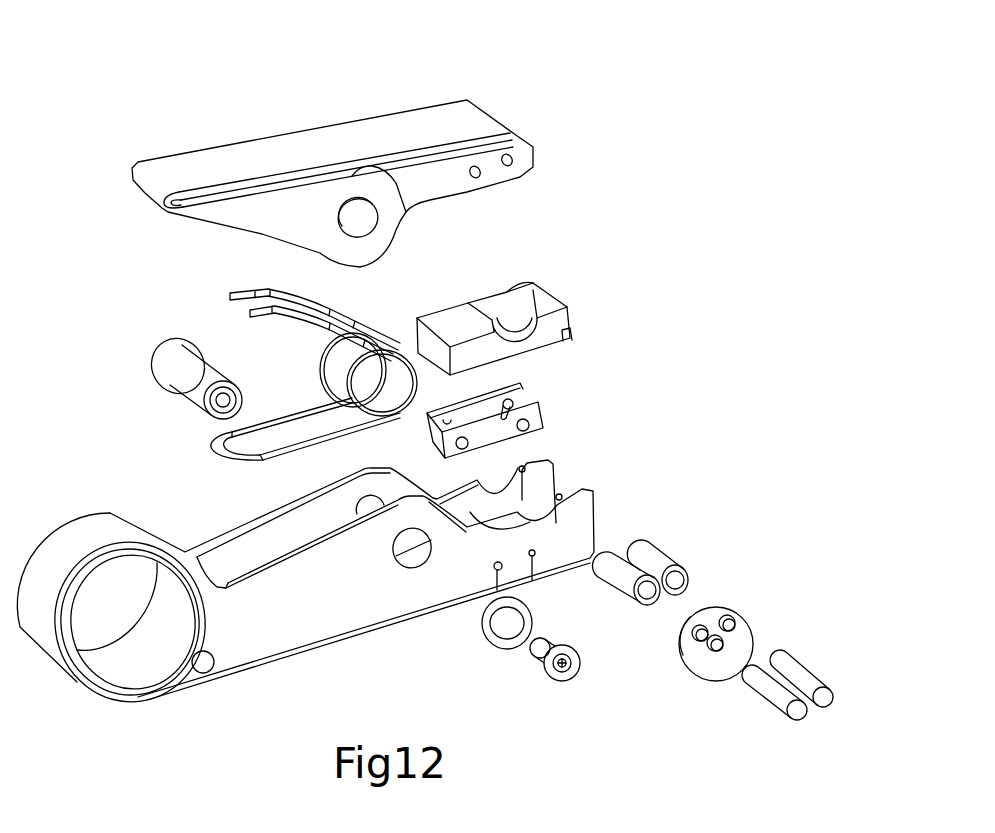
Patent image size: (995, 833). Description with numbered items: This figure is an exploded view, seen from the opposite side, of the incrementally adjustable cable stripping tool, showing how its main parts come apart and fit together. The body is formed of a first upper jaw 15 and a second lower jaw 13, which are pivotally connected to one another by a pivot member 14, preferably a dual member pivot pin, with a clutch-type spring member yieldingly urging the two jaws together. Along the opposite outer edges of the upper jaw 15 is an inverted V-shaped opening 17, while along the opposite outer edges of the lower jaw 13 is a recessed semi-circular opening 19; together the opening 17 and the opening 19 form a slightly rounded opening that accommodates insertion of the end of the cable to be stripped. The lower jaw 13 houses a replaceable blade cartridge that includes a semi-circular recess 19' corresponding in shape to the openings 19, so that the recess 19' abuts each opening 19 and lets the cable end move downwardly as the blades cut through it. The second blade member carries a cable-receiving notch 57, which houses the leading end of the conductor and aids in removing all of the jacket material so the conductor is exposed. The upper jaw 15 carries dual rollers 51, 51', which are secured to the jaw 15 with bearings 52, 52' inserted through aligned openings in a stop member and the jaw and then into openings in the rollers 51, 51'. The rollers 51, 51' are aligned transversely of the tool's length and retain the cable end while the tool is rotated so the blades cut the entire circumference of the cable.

The second lower jaw 13 is at (575, 517).
The pivot member 14 is at (182, 373).
The first upper jaw 15 is at (457, 117).
The opening 17 is at (493, 177).
The opening 19 is at (611, 411).
The semi-circular recess 19' is at (514, 311).
The roller 51 is at (606, 592).
The roller 51' is at (696, 546).
The bearing 52 is at (747, 703).
The bearing 52' is at (832, 658).
The cable-receiving notch 57 is at (507, 413).